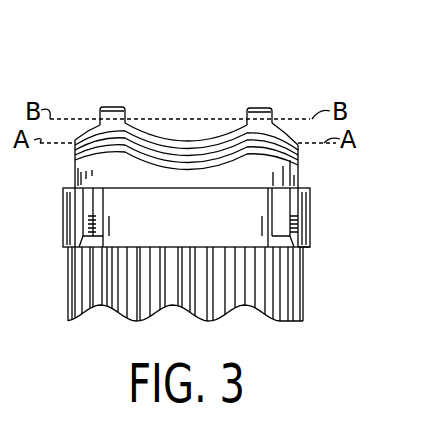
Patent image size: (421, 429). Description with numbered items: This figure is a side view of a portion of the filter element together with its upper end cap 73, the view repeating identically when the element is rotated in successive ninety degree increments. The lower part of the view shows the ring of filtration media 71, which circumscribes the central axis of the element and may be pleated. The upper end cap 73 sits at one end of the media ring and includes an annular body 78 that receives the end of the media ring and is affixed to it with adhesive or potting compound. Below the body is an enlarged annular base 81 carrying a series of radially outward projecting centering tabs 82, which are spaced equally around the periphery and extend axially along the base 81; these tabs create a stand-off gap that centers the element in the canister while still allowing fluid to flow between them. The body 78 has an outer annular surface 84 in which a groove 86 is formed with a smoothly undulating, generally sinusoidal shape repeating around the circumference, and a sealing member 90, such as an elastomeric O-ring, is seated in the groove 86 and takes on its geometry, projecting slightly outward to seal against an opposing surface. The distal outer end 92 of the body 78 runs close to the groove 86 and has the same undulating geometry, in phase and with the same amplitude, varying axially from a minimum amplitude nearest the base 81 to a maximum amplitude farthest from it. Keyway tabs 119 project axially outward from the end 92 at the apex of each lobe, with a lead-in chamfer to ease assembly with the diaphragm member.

The filtration media 71 is at (297, 297).
The upper end cap 73 is at (308, 196).
The annular body 78 is at (78, 170).
The annular base 81 is at (310, 236).
The centering tabs 82 is at (88, 218).
The outer annular surface 84 is at (236, 165).
The groove 86 is at (146, 147).
The sealing member 90 is at (300, 144).
The distal outer end 92 is at (133, 121).
The keyway tabs 119 is at (108, 106).